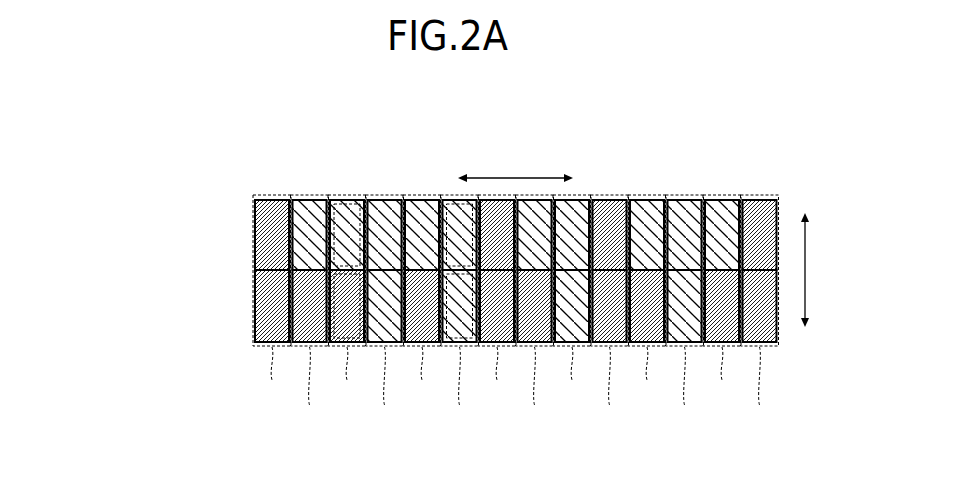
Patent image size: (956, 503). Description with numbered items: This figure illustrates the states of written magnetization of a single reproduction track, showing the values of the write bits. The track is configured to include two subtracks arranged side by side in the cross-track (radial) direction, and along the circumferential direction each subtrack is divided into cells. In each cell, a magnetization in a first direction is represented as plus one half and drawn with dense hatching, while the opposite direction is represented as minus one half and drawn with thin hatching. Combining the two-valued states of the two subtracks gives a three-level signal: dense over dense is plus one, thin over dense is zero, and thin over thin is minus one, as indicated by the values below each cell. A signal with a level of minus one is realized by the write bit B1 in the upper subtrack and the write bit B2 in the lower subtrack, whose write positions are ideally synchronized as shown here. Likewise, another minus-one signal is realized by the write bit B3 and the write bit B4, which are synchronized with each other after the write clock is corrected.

The write bit B1 is at (349, 196).
The write bit B2 is at (341, 347).
The write bit B3 is at (450, 196).
The write bit B4 is at (455, 347).